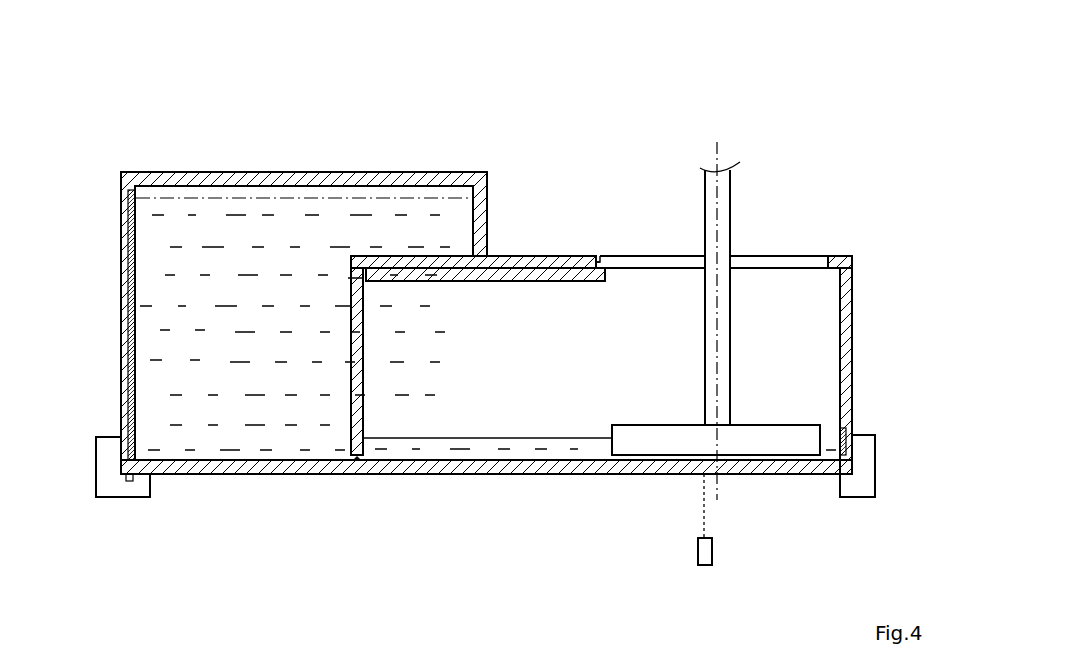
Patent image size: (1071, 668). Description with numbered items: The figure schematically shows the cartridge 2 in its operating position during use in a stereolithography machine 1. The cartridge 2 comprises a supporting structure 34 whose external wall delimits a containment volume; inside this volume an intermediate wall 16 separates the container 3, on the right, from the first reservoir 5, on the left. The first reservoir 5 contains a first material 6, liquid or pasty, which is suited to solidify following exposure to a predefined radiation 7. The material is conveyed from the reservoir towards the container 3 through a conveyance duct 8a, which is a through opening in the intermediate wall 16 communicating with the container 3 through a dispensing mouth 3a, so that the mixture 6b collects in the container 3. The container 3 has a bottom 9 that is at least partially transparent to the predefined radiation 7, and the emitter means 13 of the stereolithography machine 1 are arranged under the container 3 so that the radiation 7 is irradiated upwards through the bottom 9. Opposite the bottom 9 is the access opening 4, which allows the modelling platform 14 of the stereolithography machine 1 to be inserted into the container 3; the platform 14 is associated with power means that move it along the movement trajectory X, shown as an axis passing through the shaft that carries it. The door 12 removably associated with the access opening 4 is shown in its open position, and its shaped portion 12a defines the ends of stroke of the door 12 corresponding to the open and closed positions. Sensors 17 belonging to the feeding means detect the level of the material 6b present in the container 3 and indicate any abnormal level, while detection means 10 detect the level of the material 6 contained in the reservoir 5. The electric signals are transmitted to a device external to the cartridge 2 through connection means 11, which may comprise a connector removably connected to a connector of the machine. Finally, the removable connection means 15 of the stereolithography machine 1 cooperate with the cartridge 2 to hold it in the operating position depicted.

The stereolithography machine 1 is at (871, 203).
The cartridge 2 is at (112, 128).
The container 3 is at (796, 352).
The dispensing mouth 3a is at (368, 464).
The access opening 4 is at (781, 256).
The first reservoir 5 is at (321, 190).
The first material 6 is at (170, 247).
The mixture 6b is at (468, 452).
The predefined radiation 7 is at (701, 504).
The conveyance duct 8a is at (351, 463).
The bottom 9 is at (801, 477).
The detection means 10 is at (127, 296).
The connection means 11 is at (132, 484).
The door 12 is at (557, 274).
The shaped portion 12a is at (600, 262).
The emitter means 13 is at (699, 560).
The modelling platform 14 is at (781, 437).
The removable connection means 15 is at (112, 498).
The intermediate wall 16 is at (350, 432).
The sensors 17 is at (847, 432).
The supporting structure 34 is at (853, 311).
The movement trajectory X is at (716, 157).